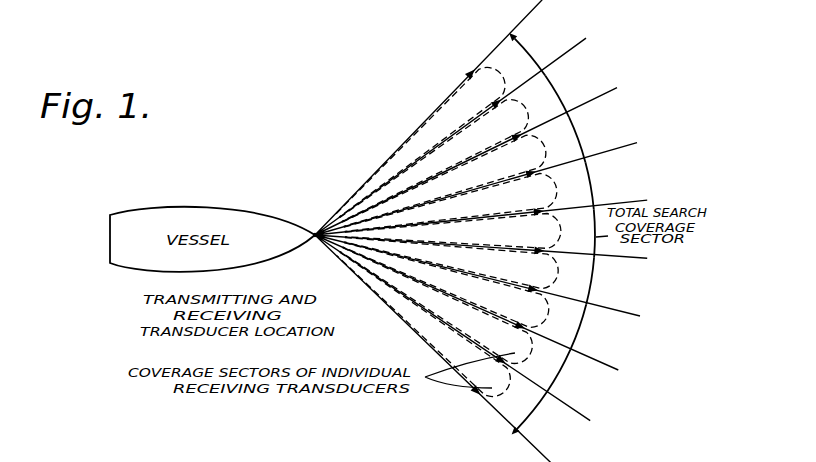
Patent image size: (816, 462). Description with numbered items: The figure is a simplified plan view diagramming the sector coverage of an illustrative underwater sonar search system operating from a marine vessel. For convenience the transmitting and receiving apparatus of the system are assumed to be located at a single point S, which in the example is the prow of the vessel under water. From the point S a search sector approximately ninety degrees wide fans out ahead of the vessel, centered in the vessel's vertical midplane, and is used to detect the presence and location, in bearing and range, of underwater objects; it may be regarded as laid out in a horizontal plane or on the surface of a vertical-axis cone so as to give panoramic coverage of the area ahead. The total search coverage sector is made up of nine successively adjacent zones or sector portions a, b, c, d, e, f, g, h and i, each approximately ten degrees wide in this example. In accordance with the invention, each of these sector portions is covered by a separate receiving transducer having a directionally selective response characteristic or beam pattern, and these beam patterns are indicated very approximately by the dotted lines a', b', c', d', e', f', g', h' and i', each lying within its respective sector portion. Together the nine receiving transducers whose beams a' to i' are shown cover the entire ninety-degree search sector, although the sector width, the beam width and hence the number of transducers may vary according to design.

The transmitting and receiving apparatus location point S is at (299, 287).
The sector portion a is at (423, 324).
The sector portion b is at (436, 306).
The sector portion c is at (446, 285).
The sector portion d is at (451, 263).
The sector portion e is at (453, 231).
The sector portion f is at (450, 203).
The sector portion g is at (444, 180).
The sector portion h is at (434, 161).
The sector portion i is at (420, 142).
The receiving transducer beam pattern a' is at (536, 415).
The receiving transducer beam pattern b' is at (567, 371).
The receiving transducer beam pattern c' is at (589, 327).
The receiving transducer beam pattern d' is at (604, 280).
The receiving transducer beam pattern e' is at (602, 235).
The receiving transducer beam pattern f' is at (599, 185).
The receiving transducer beam pattern g' is at (591, 139).
The receiving transducer beam pattern h' is at (574, 90).
The receiving transducer beam pattern i' is at (538, 44).